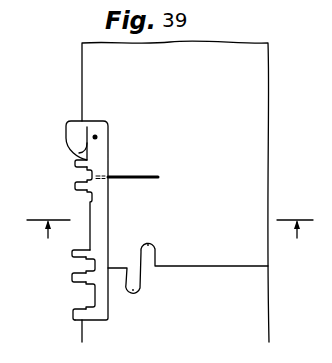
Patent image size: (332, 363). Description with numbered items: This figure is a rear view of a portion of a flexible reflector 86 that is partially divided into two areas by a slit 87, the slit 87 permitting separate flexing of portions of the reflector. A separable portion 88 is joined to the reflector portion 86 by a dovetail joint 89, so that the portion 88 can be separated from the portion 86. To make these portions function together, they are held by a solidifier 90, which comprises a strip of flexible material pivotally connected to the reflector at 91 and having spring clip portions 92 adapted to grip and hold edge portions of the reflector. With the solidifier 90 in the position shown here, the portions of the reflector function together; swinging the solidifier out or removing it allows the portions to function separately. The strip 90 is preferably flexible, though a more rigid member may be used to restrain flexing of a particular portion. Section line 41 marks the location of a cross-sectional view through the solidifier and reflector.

The section line 41 is at (170, 219).
The flexible reflector 86 is at (270, 120).
The slit 87 is at (131, 176).
The separable portion 88 is at (295, 305).
The dovetail joint 89 is at (156, 250).
The solidifier 90 is at (155, 202).
The pivotal connection 91 is at (97, 136).
The spring clip portions 92 is at (75, 163).